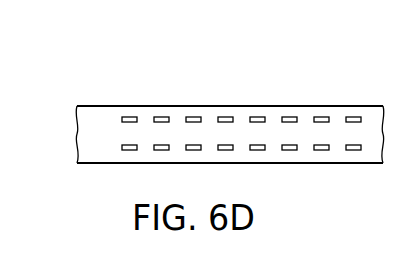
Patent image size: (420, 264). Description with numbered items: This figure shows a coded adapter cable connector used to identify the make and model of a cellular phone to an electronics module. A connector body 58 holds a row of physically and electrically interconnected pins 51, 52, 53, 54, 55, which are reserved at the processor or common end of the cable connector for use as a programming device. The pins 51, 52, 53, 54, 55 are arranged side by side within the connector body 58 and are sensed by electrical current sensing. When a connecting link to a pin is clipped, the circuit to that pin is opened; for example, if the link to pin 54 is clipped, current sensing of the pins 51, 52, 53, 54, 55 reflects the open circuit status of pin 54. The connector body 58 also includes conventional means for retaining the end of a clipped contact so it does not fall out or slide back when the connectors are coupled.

The connector body 58 is at (97, 117).
The pin 51 is at (129, 116).
The pin 52 is at (161, 116).
The pin 53 is at (193, 116).
The pin 54 is at (225, 116).
The pin 55 is at (258, 116).